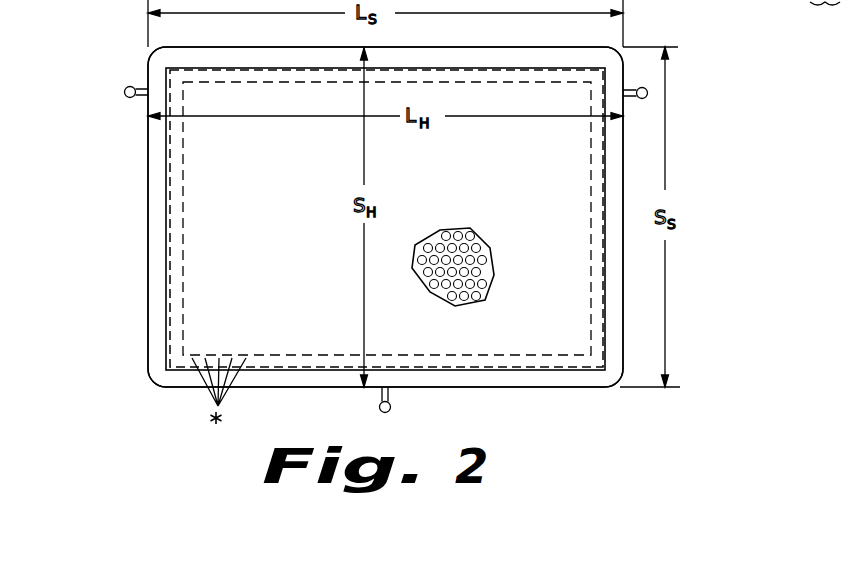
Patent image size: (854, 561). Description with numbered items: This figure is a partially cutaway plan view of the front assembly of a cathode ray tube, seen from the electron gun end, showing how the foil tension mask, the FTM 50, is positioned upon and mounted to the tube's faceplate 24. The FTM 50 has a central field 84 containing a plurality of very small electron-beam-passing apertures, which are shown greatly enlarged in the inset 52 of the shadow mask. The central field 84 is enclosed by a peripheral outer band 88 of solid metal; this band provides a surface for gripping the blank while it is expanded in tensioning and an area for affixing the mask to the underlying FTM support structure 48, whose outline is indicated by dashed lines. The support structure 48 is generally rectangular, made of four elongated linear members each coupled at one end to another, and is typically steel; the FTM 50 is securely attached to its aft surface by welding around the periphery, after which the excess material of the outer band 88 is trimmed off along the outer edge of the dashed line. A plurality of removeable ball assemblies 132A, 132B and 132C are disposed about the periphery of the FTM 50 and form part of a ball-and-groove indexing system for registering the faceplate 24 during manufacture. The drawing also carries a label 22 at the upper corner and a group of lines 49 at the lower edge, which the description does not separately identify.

The display apparatus 22 is at (829, 18).
The faceplate 24 is at (623, 135).
The FTM support structure 48 is at (604, 290).
The shade lines 49 is at (198, 421).
The FTM 50 is at (138, 233).
The inset 52 is at (472, 230).
The central field 84 is at (299, 210).
The peripheral outer band 88 is at (157, 153).
The removeable ball assembly 132A is at (127, 86).
The removeable ball assembly 132B is at (648, 93).
The removeable ball assembly 132C is at (391, 407).